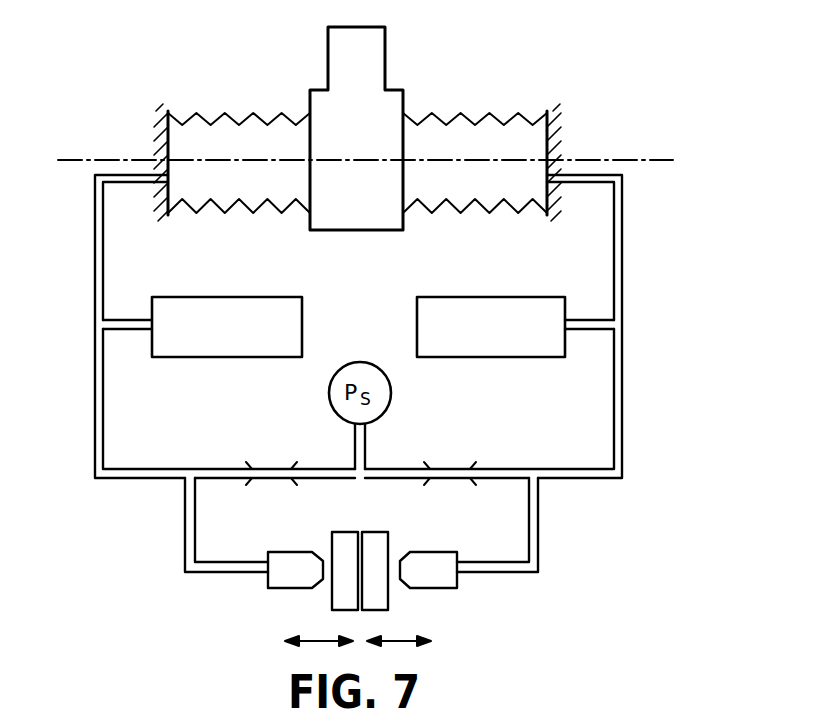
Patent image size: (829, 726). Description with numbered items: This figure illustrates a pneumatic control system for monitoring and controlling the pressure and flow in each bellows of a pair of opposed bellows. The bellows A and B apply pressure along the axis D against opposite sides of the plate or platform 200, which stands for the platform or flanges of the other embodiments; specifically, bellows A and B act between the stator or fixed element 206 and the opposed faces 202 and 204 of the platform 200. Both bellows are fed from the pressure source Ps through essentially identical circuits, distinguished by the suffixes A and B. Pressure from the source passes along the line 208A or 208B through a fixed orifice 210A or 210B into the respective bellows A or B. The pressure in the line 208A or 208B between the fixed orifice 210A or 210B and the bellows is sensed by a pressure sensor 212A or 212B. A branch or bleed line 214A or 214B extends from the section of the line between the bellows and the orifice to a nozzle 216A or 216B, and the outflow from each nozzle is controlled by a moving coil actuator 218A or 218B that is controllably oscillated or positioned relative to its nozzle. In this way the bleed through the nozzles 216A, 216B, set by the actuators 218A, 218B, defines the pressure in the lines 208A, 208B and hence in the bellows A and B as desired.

The platform 200 is at (392, 43).
The opposed face 202 is at (310, 147).
The opposed face 204 is at (405, 148).
The fixed element 206 is at (157, 131).
The line 208A is at (104, 410).
The line 208B is at (614, 408).
The fixed orifice 210A is at (271, 466).
The fixed orifice 210B is at (445, 466).
The pressure sensor 212A is at (253, 296).
The pressure sensor 212B is at (468, 296).
The bleed line 214A is at (180, 528).
The bleed line 214B is at (541, 528).
The nozzle 216A is at (303, 589).
The nozzle 216B is at (415, 589).
The moving coil actuator 218A is at (332, 548).
The moving coil actuator 218B is at (391, 548).
The bellows A is at (212, 118).
The bellows B is at (521, 110).
The axis D is at (640, 160).